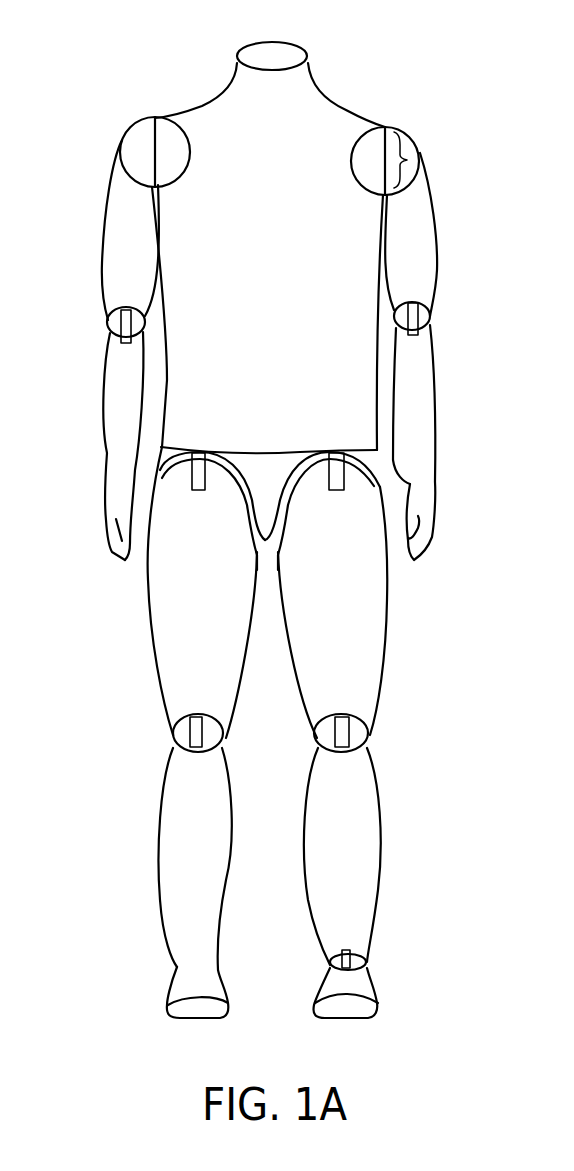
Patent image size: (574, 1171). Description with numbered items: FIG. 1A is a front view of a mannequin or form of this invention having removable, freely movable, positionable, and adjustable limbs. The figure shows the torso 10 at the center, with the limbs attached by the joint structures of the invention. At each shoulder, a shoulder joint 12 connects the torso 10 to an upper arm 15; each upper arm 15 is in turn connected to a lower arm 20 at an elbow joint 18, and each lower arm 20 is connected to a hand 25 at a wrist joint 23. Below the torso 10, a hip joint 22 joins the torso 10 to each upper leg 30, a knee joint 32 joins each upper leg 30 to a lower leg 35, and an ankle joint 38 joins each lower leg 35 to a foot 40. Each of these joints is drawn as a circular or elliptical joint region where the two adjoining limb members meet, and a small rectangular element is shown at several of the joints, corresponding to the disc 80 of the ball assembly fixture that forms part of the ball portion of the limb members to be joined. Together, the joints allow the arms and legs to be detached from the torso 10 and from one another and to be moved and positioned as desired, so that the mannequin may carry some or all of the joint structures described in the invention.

The torso 10 is at (295, 127).
The shoulder joint 12 is at (407, 157).
The upper arm 15 is at (423, 243).
The elbow joint 18 is at (442, 290).
The lower arm 20 is at (415, 400).
The hip joint 22 is at (373, 446).
The wrist joint 23 is at (440, 460).
The hand 25 is at (425, 520).
The upper leg 30 is at (365, 650).
The knee joint 32 is at (387, 707).
The lower leg 35 is at (367, 850).
The ankle joint 38 is at (378, 947).
The foot 40 is at (360, 985).
The disc 80 is at (428, 325).